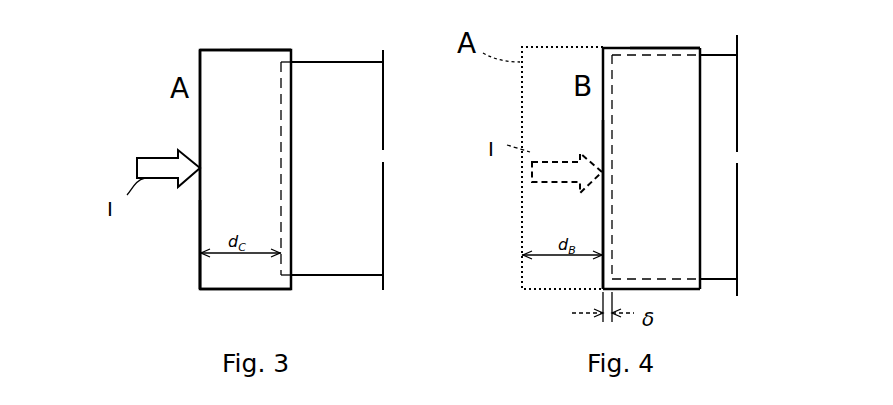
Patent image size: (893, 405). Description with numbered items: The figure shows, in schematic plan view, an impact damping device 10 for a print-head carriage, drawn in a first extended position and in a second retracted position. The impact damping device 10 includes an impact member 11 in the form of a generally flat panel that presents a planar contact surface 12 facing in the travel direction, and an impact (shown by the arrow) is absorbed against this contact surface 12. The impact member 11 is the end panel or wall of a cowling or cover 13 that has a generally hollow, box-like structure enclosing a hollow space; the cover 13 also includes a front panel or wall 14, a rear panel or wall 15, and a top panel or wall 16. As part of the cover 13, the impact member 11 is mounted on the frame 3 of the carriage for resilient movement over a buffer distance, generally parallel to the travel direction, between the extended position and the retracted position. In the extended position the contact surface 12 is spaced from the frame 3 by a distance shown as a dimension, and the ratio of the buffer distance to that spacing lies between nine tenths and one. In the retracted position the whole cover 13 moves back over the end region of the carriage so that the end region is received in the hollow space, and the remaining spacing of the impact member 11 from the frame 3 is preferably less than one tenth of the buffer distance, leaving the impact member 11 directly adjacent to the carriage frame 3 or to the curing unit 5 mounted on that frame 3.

In FIG. 3, the frame 3 is at (303, 276).
In FIG. 4, the frame 3 is at (663, 297).
In FIG. 3, the curing unit 5 is at (412, 155).
In FIG. 4, the curing unit 5 is at (757, 160).
In FIG. 3, the impact damping device 10 is at (195, 298).
In FIG. 3, the impact member 11 is at (200, 125).
In FIG. 4, the impact member 11 is at (603, 112).
In FIG. 3, the contact surface 12 is at (200, 223).
In FIG. 4, the contact surface 12 is at (603, 135).
In FIG. 3, the cowling or cover 13 is at (191, 52).
In FIG. 4, the cowling or cover 13 is at (605, 46).
In FIG. 3, the front panel or wall 14 is at (247, 290).
In FIG. 4, the front panel or wall 14 is at (688, 290).
In FIG. 3, the rear panel or wall 15 is at (267, 50).
In FIG. 4, the rear panel or wall 15 is at (652, 48).
In FIG. 3, the top panel or wall 16 is at (256, 157).
In FIG. 4, the top panel or wall 16 is at (664, 182).